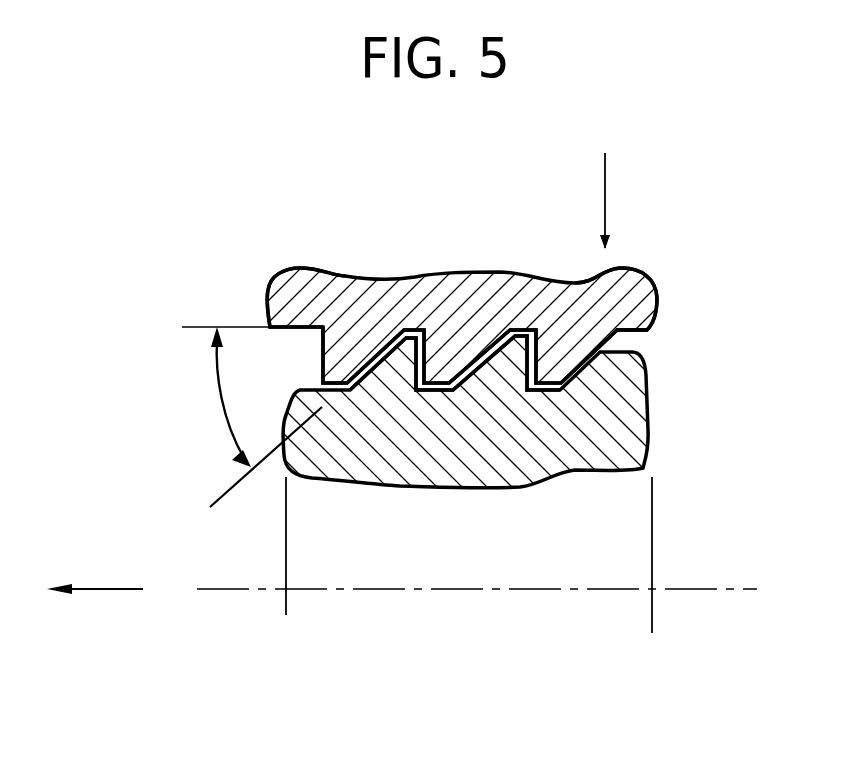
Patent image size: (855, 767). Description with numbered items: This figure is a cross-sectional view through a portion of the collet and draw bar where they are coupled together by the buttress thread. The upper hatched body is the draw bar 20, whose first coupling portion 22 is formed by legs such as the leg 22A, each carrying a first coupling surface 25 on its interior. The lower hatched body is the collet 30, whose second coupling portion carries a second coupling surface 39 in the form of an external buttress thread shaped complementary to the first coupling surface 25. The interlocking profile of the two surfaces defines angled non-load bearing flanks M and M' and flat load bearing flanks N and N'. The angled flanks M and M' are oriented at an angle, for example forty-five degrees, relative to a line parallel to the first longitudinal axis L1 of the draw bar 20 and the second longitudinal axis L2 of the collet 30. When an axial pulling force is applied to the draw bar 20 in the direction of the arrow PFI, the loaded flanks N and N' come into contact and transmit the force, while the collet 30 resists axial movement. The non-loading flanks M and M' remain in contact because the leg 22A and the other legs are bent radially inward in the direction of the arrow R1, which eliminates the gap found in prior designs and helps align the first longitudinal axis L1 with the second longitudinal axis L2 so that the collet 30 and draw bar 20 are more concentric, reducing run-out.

The draw bar 20 is at (348, 300).
The first coupling portion 22 is at (303, 284).
The leg 22A is at (624, 302).
The first coupling surface 25 is at (416, 350).
The collet 30 is at (350, 450).
The second coupling surface 39 is at (392, 400).
The angled non-load bearing flank M is at (320, 367).
The angled non-load bearing flank M' is at (439, 270).
The flat load bearing flank N is at (484, 276).
The flat load bearing flank N' is at (462, 454).
The arrow R1 is at (607, 198).
The arrow PFI is at (113, 592).
The first longitudinal axis L1 is at (233, 592).
The second longitudinal axis L2 is at (735, 592).